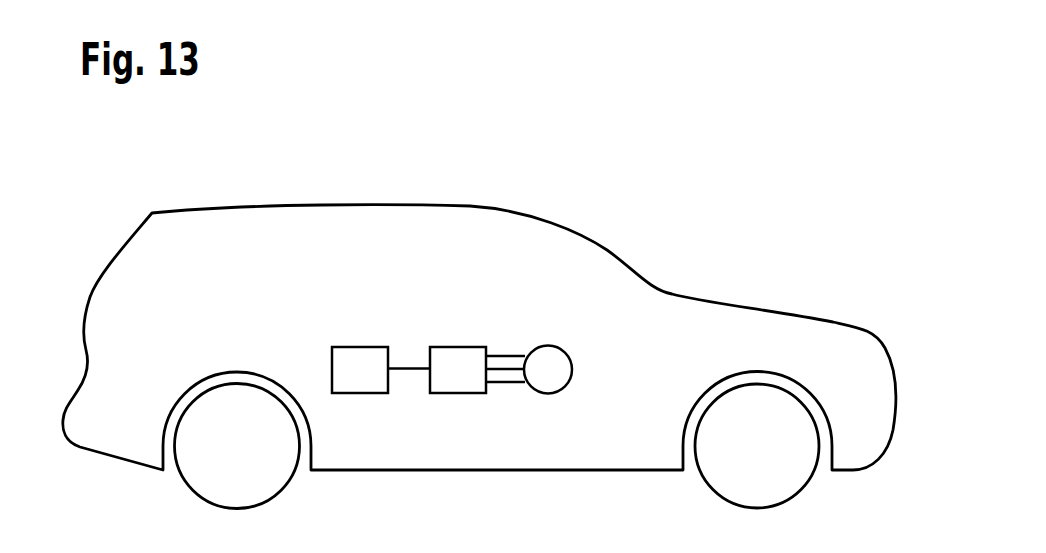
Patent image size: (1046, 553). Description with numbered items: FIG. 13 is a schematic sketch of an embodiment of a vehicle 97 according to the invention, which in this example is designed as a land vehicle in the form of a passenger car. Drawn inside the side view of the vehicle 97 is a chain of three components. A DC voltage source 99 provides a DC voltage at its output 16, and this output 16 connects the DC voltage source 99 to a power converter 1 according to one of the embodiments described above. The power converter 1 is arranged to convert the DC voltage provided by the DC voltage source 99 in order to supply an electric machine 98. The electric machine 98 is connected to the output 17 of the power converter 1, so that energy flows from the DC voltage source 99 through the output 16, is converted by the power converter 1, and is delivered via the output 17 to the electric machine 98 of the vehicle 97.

The vehicle 97 is at (306, 204).
The DC voltage source 99 is at (357, 347).
The output 16 is at (416, 352).
The power converter 1 is at (457, 347).
The output 17 is at (500, 349).
The electric machine 98 is at (548, 346).